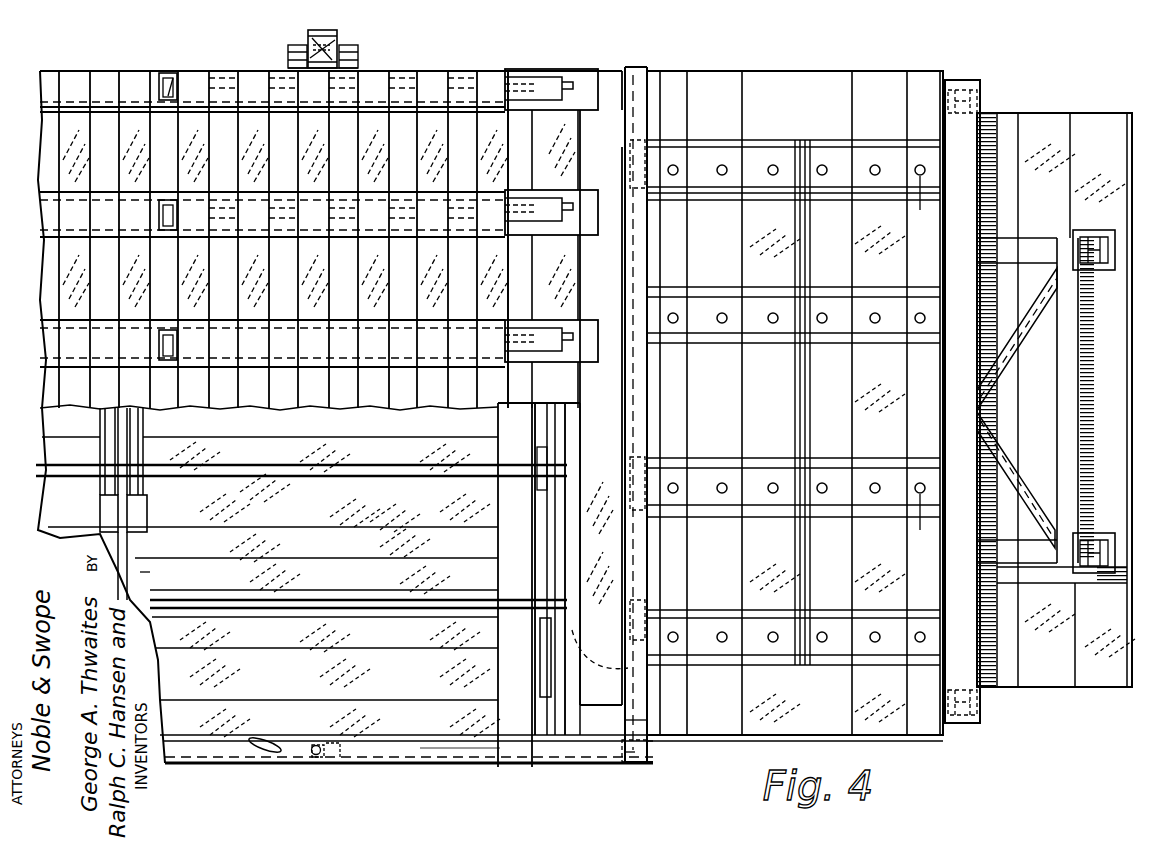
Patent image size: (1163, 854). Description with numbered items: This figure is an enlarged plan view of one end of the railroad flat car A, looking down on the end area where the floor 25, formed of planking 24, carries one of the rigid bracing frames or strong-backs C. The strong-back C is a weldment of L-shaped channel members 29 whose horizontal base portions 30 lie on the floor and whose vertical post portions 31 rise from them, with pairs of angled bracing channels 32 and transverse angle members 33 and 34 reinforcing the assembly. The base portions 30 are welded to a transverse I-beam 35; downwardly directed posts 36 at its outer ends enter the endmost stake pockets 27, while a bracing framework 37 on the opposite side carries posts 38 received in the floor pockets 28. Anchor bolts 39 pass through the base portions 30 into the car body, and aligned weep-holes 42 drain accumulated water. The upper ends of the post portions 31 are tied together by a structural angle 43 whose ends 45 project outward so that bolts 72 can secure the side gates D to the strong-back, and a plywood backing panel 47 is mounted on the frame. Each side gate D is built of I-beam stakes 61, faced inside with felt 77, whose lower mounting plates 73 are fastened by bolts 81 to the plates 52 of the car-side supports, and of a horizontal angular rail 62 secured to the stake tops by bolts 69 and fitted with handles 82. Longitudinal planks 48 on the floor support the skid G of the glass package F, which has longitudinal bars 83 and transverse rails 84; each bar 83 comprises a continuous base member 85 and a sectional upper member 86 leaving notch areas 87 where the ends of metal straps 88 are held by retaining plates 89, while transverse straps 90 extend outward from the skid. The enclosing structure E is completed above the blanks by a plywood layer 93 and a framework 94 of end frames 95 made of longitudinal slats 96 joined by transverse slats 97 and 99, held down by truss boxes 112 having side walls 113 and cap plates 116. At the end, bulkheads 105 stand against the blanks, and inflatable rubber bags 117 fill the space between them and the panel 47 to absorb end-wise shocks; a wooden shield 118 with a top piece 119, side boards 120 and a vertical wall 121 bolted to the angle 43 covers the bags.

The skid G is at (76, 95).
The longitudinal bars 83 is at (107, 95).
The transverse rails 84 is at (487, 97).
The notch areas 87 is at (165, 72).
The retaining plate 89 is at (172, 88).
The metal strap 88 is at (224, 78).
The stakes 61 is at (306, 36).
The bolts 81 is at (290, 50).
The mounting plate 73 is at (357, 52).
The plate 52 is at (357, 64).
The base member 85 is at (551, 70).
The upper member 86 is at (522, 75).
The planks 48 is at (592, 252).
The backing panel 47 is at (628, 170).
The structural angle 43 is at (638, 95).
The protective board layer 93 is at (478, 420).
The truss boxes 112 is at (98, 418).
The side walls 113 is at (141, 424).
The cap plates 116 is at (135, 513).
The transverse banding straps 90 is at (105, 543).
The medial transverse slats 99 is at (130, 572).
The longitudinal slats 96 is at (372, 545).
The end transverse slats 97 is at (508, 490).
The bulkheads 105 is at (549, 722).
The handles 82 is at (267, 735).
The bolts 69 is at (318, 745).
The felt layer 77 is at (336, 746).
The framework 94 is at (243, 712).
The end frame 95 is at (283, 708).
The side gates D is at (378, 770).
The rail 62 is at (423, 748).
The unitized package F is at (478, 680).
The enclosing structure E is at (514, 682).
The inflatable rubber bags 117 is at (648, 688).
The side boards 120 is at (647, 720).
The shield 118 is at (602, 547).
The top piece 119 is at (600, 573).
The vertical wall 121 is at (600, 592).
The angle ends 45 is at (650, 747).
The bolts 72 is at (650, 762).
The floor 25 is at (716, 88).
The planking 24 is at (806, 98).
The strong-backs C is at (856, 138).
The base portions 30 is at (707, 160).
The anchor bolts 39 is at (823, 164).
The bracing channels 32 is at (750, 141).
The weep-holes 42 is at (921, 360).
The angle member 34 is at (806, 257).
The post portions 31 is at (652, 146).
The angle member 33 is at (660, 256).
The L-shaped channel members 29 is at (690, 306).
The posts 36 is at (968, 84).
The I-beam 35 is at (958, 135).
The railroad flat car A is at (1048, 110).
The bracing framework 37 is at (1066, 395).
The floor pockets 28 is at (1092, 232).
The posts 38 is at (1095, 266).
The stake pockets 27 is at (1000, 692).